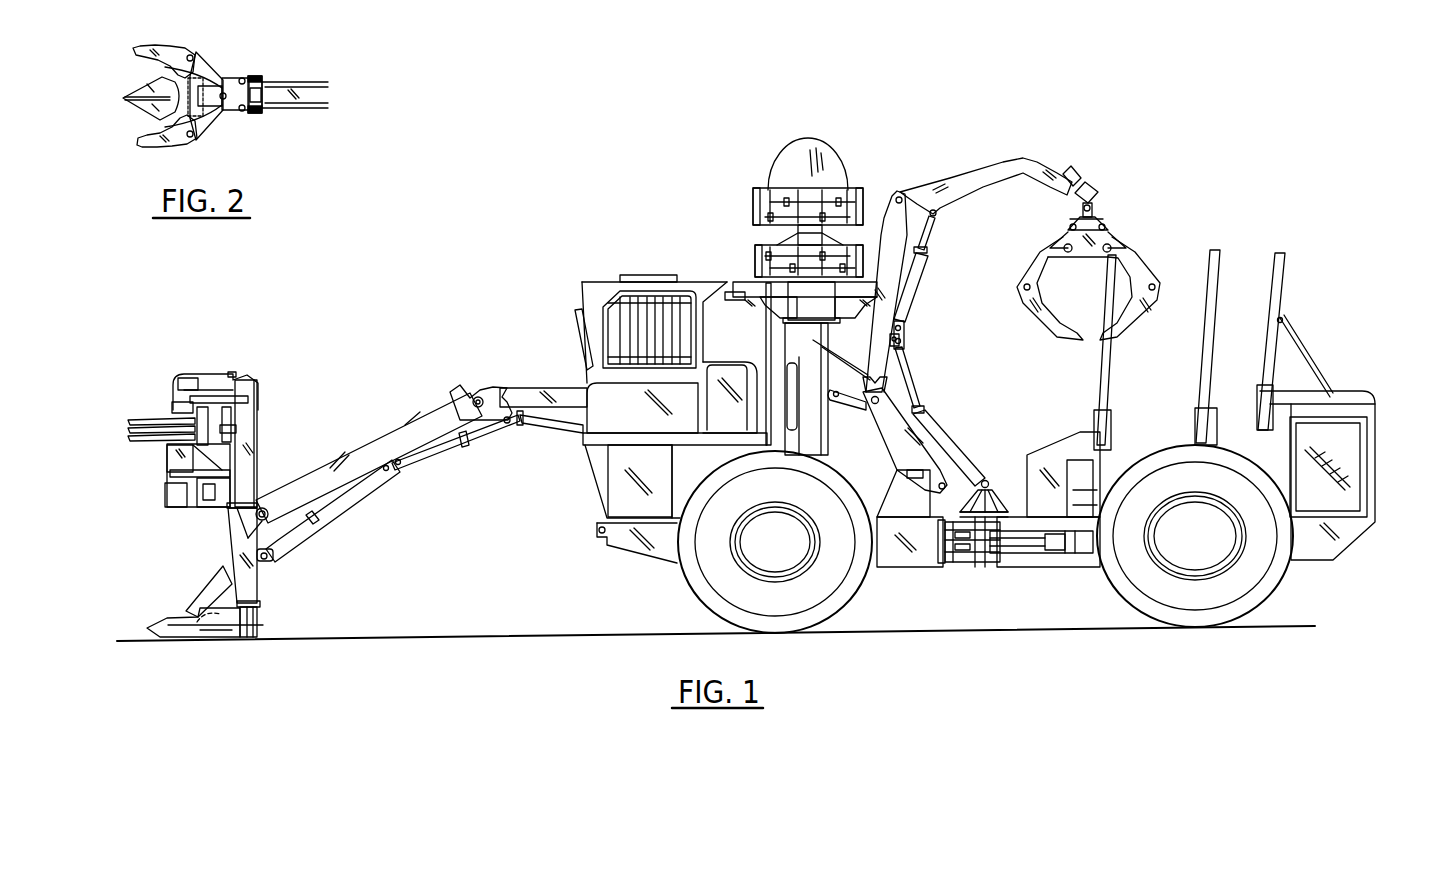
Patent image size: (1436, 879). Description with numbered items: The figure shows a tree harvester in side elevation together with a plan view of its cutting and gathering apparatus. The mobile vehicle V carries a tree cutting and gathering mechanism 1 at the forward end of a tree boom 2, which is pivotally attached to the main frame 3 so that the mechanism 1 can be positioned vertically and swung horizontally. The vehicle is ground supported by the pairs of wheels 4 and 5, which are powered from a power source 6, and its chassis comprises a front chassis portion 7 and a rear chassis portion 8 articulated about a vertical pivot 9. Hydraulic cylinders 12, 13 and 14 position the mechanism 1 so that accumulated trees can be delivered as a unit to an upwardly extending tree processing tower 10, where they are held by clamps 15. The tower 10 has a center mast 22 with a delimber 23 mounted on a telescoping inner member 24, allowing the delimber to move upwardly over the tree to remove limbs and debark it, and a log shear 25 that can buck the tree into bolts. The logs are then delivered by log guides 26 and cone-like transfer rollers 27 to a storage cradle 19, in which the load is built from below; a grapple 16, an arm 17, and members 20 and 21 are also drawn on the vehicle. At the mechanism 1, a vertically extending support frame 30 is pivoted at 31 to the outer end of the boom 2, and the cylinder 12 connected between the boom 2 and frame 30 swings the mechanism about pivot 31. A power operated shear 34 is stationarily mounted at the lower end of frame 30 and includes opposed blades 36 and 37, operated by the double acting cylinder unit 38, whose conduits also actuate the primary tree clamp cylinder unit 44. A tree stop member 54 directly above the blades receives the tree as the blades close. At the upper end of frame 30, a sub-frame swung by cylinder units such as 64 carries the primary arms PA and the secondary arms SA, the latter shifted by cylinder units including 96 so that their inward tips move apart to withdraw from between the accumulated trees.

In FIG. 1, the tree cutting and gathering mechanism 1 is at (193, 423).
In FIG. 2, the tree cutting and gathering mechanism 1 is at (168, 100).
In FIG. 1, the tree boom 2 is at (362, 442).
In FIG. 2, the tree boom 2 is at (300, 80).
In FIG. 1, the main frame 3 is at (640, 556).
In FIG. 1, the wheels 4 is at (852, 612).
In FIG. 1, the wheels 5 is at (1280, 591).
In FIG. 1, the power source 6 is at (1356, 470).
In FIG. 1, the front chassis portion 7 is at (903, 565).
In FIG. 1, the rear chassis portion 8 is at (1066, 566).
In FIG. 1, the vertical pivot 9 is at (983, 570).
In FIG. 1, the tree processing tower 10 is at (815, 198).
In FIG. 1, the hydraulic cylinder 12 is at (348, 492).
In FIG. 1, the hydraulic cylinder 13 is at (488, 437).
In FIG. 1, the hydraulic cylinder 14 is at (548, 428).
In FIG. 1, the clamps 15 is at (757, 250).
In FIG. 1, the grapple 16 is at (1148, 258).
In FIG. 1, the crane arm 17 is at (1021, 160).
In FIG. 1, the cradle 19 is at (1097, 388).
In FIG. 1, the crane cylinder 20 is at (925, 423).
In FIG. 1, the arm cylinder 21 is at (923, 280).
In FIG. 1, the center mast 22 is at (793, 344).
In FIG. 1, the delimber 23 is at (864, 190).
In FIG. 1, the telescoping inner member 24 is at (607, 282).
In FIG. 1, the log shear 25 is at (768, 302).
In FIG. 1, the log guides 26 is at (858, 416).
In FIG. 1, the cone-like transfer rollers 27 is at (988, 488).
In FIG. 1, the support frame 30 is at (228, 531).
In FIG. 1, the pivot 31 is at (264, 505).
In FIG. 2, the pivot 31 is at (254, 84).
In FIG. 1, the power operated shear 34 is at (190, 637).
In FIG. 2, the blade 36 is at (133, 82).
In FIG. 2, the blade 37 is at (135, 118).
In FIG. 1, the double acting cylinder unit 38 is at (210, 632).
In FIG. 2, the double acting cylinder unit 38 is at (226, 80).
In FIG. 1, the primary tree clamp cylinder unit 44 is at (240, 420).
In FIG. 1, the tree stop member 54 is at (212, 589).
In FIG. 1, the hydraulic cylinder unit 64 is at (200, 392).
In FIG. 1, the double acting hydraulic cylinder unit 96 is at (207, 463).
In FIG. 1, the primary arms PA is at (127, 423).
In FIG. 1, the secondary arms SA is at (162, 487).
In FIG. 1, the mobile vehicle V is at (598, 502).